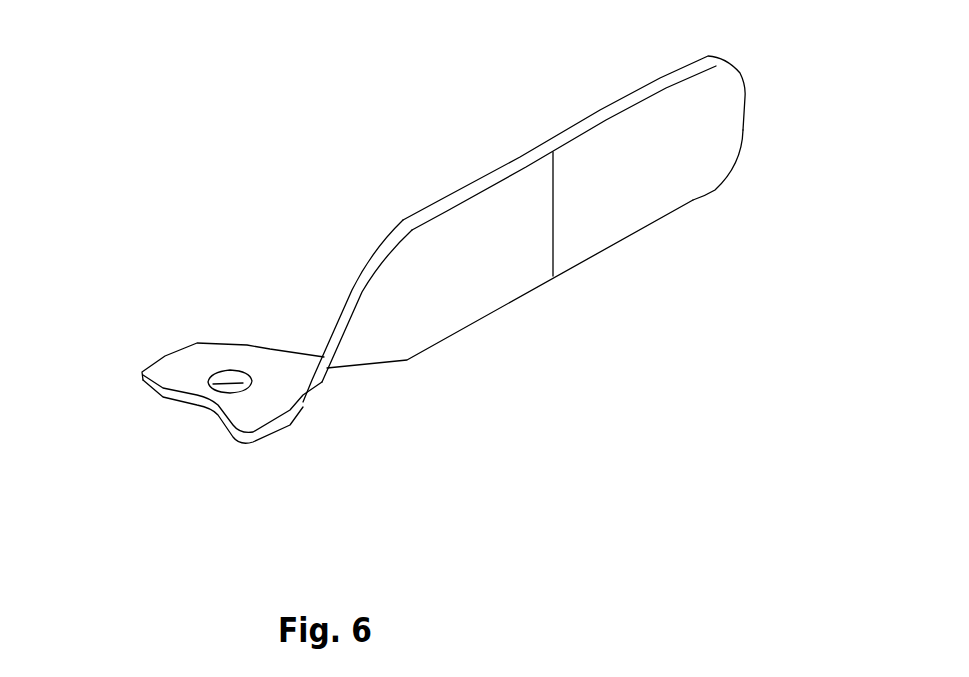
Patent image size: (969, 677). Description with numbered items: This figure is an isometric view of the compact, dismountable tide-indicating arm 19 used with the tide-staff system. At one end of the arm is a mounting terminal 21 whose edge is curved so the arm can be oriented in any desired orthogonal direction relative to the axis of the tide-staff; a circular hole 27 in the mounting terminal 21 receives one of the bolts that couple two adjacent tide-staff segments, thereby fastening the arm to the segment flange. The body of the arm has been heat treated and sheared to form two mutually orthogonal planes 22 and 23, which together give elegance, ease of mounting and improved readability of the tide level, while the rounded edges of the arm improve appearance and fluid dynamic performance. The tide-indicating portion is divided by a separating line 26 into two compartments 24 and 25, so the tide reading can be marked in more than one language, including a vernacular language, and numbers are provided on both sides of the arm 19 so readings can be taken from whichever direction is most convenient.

The tide-indicating arm 19 is at (400, 245).
The mounting terminal 21 is at (195, 348).
The first orthogonal plane 22 is at (212, 374).
The second orthogonal plane 23 is at (698, 127).
The first compartment 24 is at (510, 302).
The second compartment 25 is at (742, 210).
The separating line 26 is at (660, 253).
The circular hole 27 is at (387, 430).